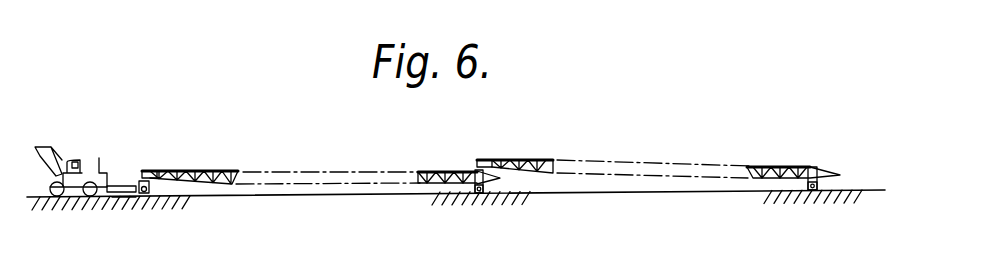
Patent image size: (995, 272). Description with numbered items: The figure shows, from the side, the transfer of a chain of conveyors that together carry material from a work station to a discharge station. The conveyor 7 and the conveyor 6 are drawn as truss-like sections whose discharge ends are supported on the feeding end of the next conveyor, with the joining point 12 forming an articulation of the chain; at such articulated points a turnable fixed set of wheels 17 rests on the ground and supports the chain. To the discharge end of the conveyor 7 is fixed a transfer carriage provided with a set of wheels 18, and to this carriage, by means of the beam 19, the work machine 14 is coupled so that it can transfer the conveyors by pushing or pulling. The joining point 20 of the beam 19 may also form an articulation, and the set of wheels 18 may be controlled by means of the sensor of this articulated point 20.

The conveyor 6 is at (765, 167).
The conveyor 7 is at (225, 170).
The joining point 12 is at (475, 167).
The work machine 14 is at (63, 167).
The turnable fixed set of wheels 17 is at (478, 195).
The set of wheels 18 is at (145, 196).
The beam 19 is at (125, 197).
The joining point 20 is at (117, 187).